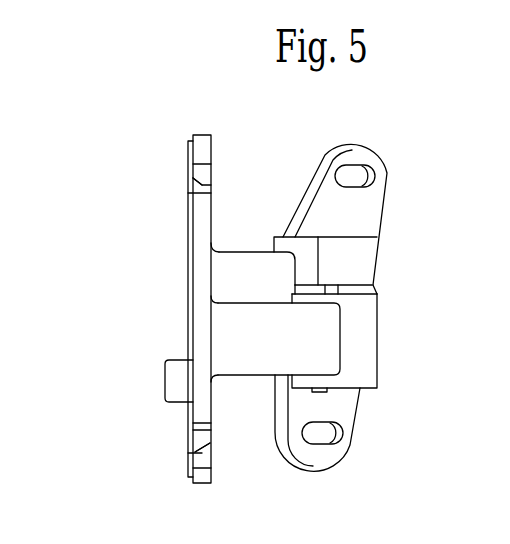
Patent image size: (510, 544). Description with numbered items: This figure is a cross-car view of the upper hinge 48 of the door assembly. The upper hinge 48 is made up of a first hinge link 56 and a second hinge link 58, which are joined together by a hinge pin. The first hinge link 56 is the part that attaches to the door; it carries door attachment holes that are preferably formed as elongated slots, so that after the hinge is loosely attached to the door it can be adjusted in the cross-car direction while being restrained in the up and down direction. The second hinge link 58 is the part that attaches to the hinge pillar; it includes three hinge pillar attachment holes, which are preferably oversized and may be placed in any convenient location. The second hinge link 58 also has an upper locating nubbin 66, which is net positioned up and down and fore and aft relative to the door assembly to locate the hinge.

The upper hinge 48 is at (225, 110).
The first hinge link 56 is at (367, 153).
The second hinge link 58 is at (211, 158).
The upper locating nubbin 66 is at (172, 360).